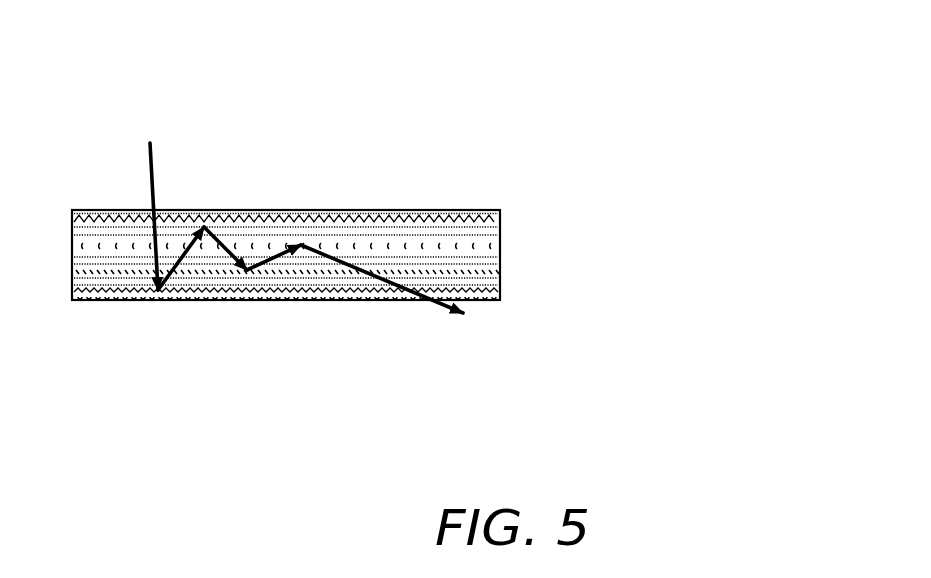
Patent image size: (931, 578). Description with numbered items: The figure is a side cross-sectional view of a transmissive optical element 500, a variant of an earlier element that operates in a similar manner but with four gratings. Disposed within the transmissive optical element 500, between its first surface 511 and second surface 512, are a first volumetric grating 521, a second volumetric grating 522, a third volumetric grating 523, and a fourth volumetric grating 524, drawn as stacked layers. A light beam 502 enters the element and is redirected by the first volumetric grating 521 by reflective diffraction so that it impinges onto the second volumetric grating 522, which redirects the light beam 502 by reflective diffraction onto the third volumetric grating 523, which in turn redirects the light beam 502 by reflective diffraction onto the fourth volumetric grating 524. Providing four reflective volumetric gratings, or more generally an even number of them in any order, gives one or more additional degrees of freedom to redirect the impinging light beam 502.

The transmissive optical element 500 is at (347, 213).
The light beam 502 is at (150, 170).
The first surface 511 is at (237, 210).
The second surface 512 is at (233, 300).
The first volumetric grating 521 is at (500, 292).
The second volumetric grating 522 is at (500, 222).
The third volumetric grating 523 is at (500, 270).
The fourth volumetric grating 524 is at (500, 246).